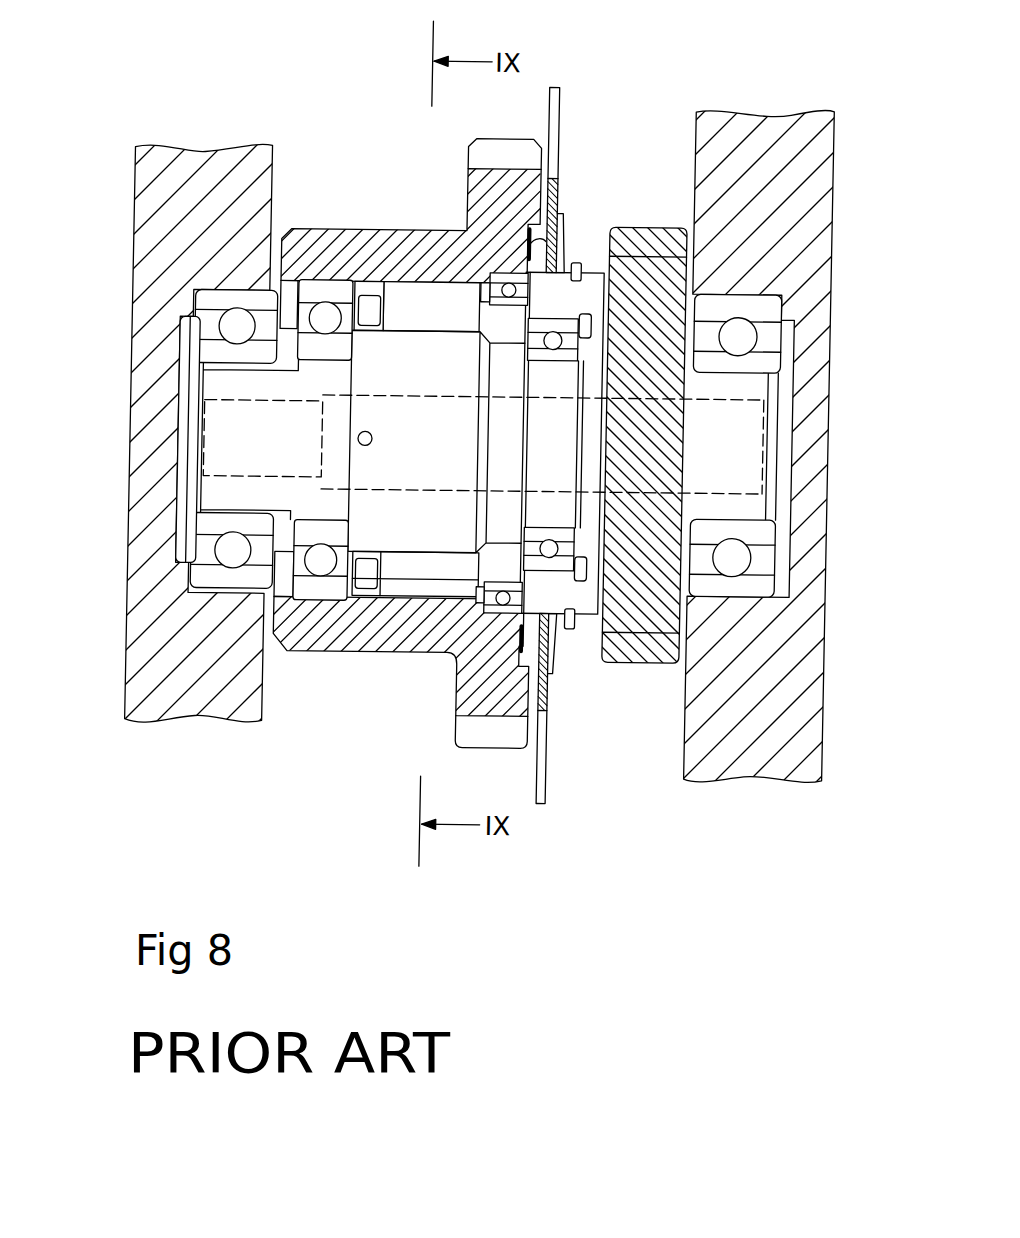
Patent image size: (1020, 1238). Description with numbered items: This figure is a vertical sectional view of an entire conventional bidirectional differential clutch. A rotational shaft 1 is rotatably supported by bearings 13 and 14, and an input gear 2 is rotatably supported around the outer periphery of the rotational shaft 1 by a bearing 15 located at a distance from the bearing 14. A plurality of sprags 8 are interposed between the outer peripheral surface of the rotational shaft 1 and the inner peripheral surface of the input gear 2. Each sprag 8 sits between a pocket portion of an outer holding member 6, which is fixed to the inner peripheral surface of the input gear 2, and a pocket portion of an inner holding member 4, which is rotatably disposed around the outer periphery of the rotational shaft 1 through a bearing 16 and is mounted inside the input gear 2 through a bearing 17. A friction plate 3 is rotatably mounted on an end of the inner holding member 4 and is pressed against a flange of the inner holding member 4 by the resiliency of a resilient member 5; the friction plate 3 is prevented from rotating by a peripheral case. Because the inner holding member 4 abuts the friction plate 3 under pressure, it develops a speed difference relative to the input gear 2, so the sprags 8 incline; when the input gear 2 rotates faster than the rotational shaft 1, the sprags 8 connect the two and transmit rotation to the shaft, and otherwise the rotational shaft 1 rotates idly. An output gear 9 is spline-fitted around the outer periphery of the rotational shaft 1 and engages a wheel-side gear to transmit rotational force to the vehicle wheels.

The rotational shaft 1 is at (217, 381).
The input gear 2 is at (505, 186).
The friction plate 3 is at (562, 215).
The inner holding member 4 is at (536, 255).
The resilient member 5 is at (564, 644).
The outer holding member 6 is at (375, 597).
The sprag 8 is at (411, 300).
The output gear 9 is at (656, 625).
The bearing 13 is at (750, 302).
The bearing 14 is at (204, 303).
The bearing 15 is at (322, 295).
The bearing 16 is at (542, 561).
The bearing 17 is at (569, 296).